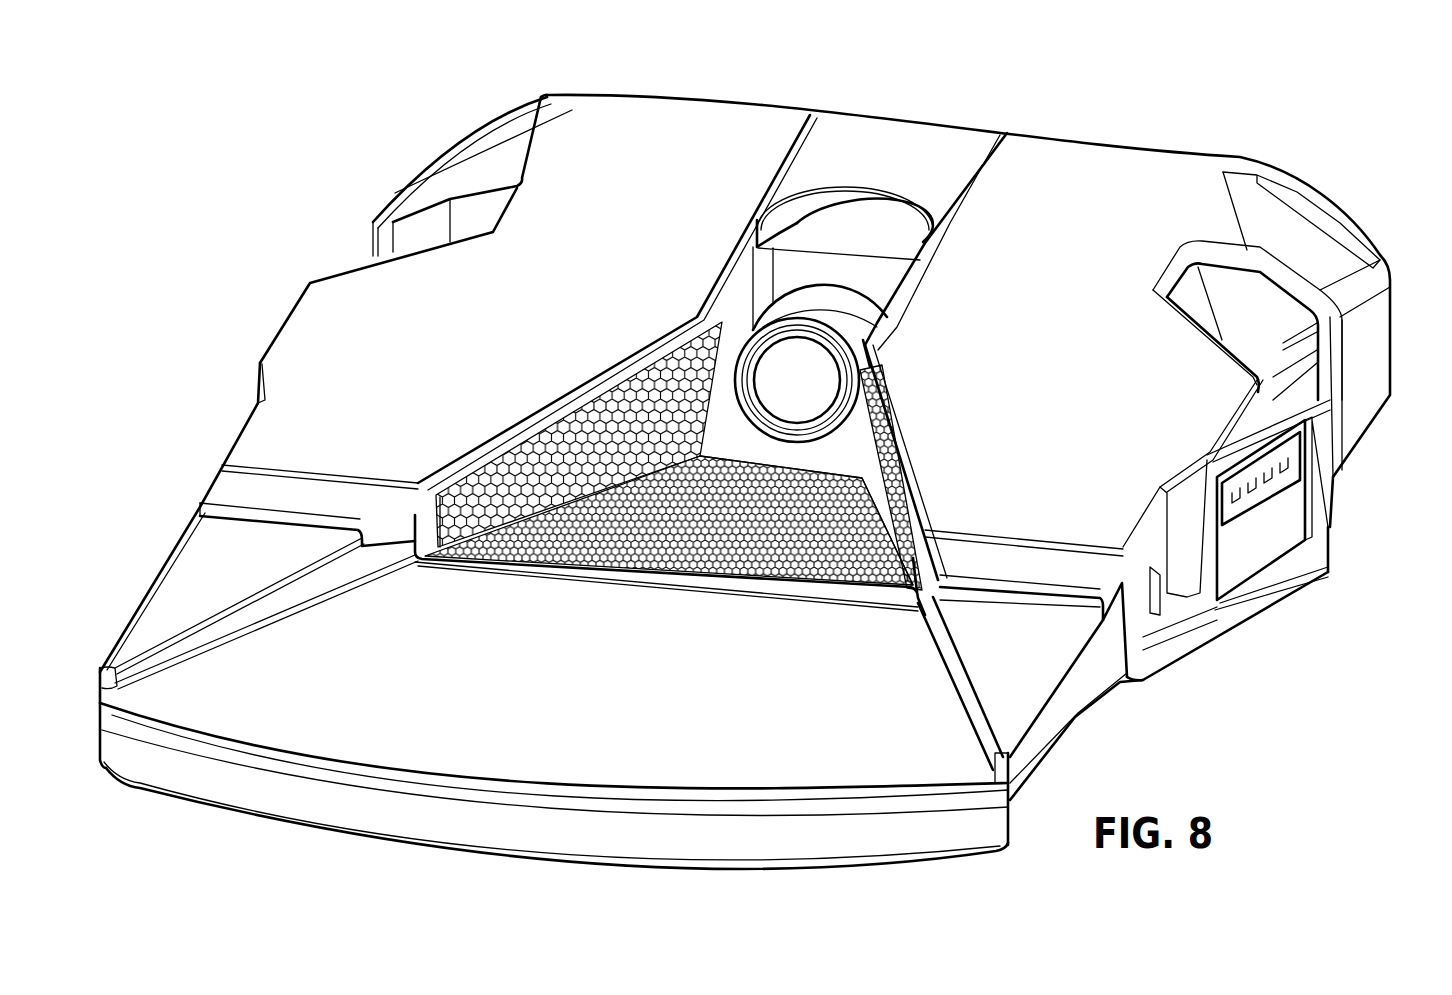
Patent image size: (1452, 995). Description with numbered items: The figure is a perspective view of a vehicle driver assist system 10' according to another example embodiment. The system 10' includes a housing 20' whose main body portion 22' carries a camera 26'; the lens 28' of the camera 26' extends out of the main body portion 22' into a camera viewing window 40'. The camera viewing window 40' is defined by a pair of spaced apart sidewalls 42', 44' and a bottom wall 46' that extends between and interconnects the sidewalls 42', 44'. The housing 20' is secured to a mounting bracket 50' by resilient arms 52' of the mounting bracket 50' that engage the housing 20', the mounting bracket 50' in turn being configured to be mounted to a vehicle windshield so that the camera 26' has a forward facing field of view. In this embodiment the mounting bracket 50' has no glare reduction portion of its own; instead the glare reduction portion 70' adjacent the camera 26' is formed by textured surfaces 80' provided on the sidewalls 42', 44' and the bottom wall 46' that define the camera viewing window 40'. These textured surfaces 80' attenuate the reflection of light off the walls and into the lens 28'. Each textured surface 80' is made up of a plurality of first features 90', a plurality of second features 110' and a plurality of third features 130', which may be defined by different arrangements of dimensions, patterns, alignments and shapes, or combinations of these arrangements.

The vehicle driver assist system 10' is at (745, 352).
The housing 20' is at (1302, 320).
The main body portion 22' is at (1270, 548).
The camera 26' is at (772, 293).
The lens 28' is at (744, 350).
The camera viewing window 40' is at (846, 196).
The sidewall 42' is at (579, 434).
The sidewall 44' is at (920, 468).
The bottom wall 46' is at (806, 565).
The mounting bracket 50' is at (1097, 316).
The resilient arms 52' is at (1306, 236).
The glare reduction portion 70' is at (944, 462).
The textured surfaces 80' is at (669, 572).
The plurality of first features 90' is at (669, 565).
The plurality of second features 110' is at (621, 703).
The plurality of third features 130' is at (668, 598).